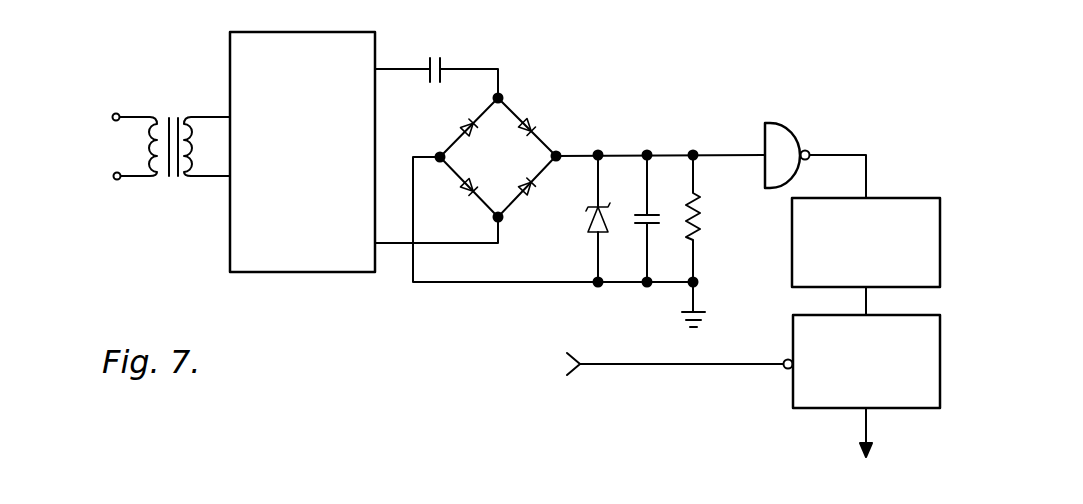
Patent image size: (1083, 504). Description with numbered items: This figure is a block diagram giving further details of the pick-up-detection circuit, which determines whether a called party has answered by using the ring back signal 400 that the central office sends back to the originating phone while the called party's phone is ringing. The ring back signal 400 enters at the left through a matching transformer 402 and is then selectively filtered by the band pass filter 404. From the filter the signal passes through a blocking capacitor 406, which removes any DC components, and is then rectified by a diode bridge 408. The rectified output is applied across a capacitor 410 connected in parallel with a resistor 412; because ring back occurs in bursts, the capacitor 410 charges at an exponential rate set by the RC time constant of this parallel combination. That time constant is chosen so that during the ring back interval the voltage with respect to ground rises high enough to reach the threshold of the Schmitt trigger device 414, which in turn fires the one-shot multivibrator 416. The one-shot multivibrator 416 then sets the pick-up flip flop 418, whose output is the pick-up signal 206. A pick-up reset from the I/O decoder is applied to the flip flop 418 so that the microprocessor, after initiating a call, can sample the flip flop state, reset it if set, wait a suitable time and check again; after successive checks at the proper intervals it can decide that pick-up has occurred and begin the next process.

The ring back signal 400 is at (114, 172).
The matching transformer 402 is at (180, 113).
The band pass filter 404 is at (300, 32).
The blocking capacitor 406 is at (442, 62).
The diode bridge 408 is at (523, 166).
The capacitor 410 is at (641, 213).
The resistor 412 is at (700, 224).
The Schmitt trigger device 414 is at (788, 128).
The one-shot multivibrator 416 is at (893, 198).
The pick-up flip flop 418 is at (793, 330).
The pick-up signal 206 is at (866, 423).